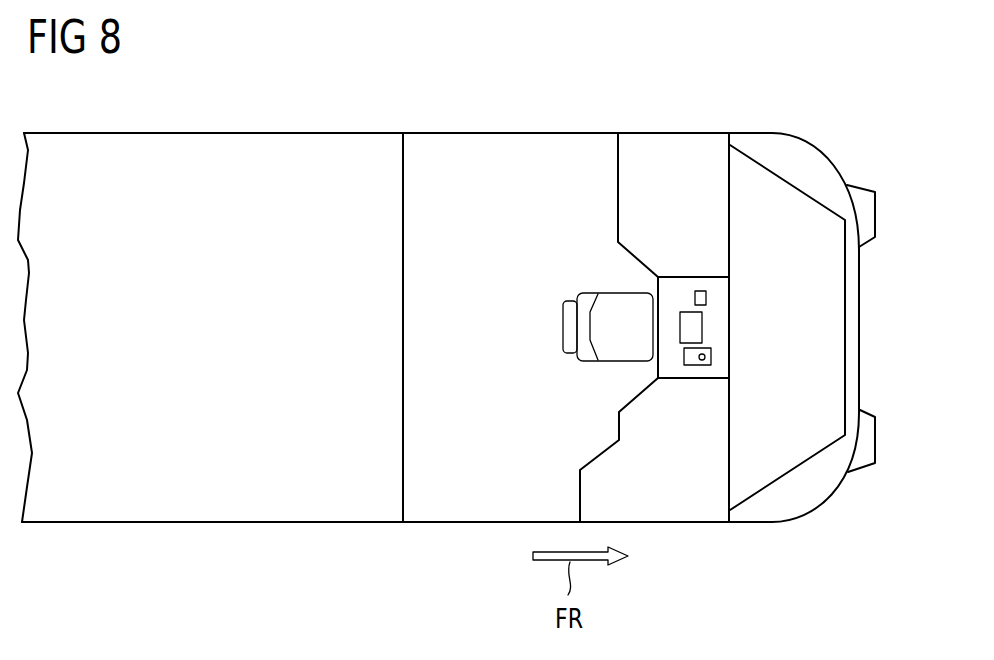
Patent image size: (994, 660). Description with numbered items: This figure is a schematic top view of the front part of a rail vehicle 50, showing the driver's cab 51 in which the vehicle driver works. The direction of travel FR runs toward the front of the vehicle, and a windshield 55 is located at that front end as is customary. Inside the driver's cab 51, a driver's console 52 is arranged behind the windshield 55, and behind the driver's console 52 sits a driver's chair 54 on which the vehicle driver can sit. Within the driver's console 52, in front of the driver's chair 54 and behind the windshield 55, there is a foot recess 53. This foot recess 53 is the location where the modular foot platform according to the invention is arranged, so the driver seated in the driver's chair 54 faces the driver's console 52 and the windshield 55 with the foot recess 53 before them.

The rail vehicle 50 is at (820, 105).
The driver's cab 51 is at (420, 302).
The driver's console 52 is at (585, 205).
The foot recess 53 is at (625, 380).
The driver's chair 54 is at (538, 350).
The windshield 55 is at (858, 308).